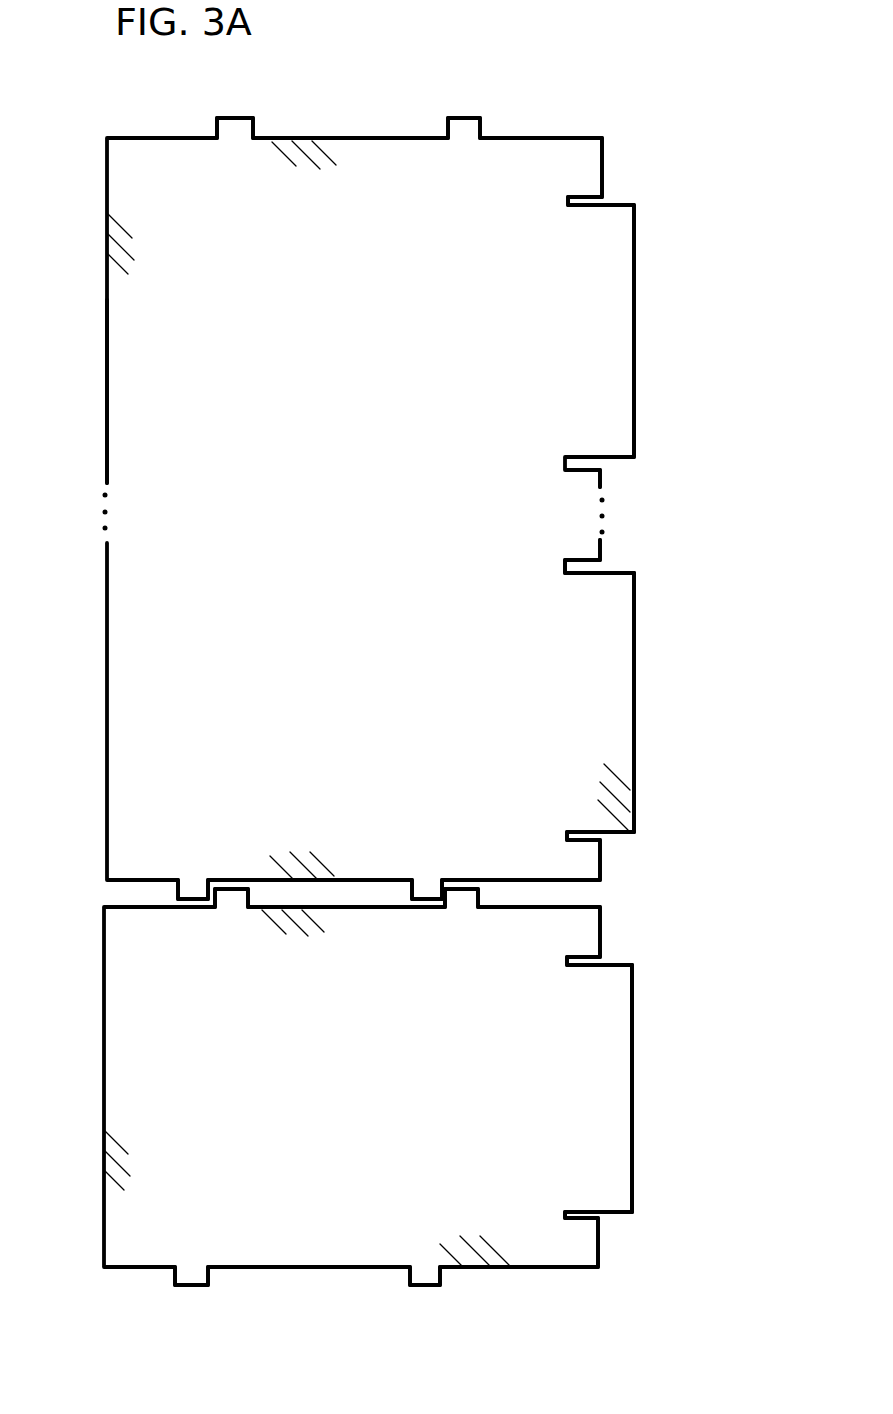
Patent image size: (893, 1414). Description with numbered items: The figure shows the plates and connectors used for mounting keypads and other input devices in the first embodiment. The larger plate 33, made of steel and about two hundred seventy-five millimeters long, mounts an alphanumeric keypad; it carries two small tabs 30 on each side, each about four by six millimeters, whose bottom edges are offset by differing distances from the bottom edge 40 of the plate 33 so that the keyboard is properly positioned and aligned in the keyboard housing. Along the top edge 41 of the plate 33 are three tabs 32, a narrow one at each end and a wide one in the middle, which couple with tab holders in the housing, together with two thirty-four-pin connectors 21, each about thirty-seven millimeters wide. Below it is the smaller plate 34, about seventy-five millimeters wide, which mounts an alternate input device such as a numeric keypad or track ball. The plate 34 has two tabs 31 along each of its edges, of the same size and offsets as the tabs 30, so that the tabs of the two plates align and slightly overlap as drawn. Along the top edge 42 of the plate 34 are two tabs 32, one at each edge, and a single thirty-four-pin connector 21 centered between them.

The 34-pin connector 21 is at (612, 328).
The tab 30 is at (238, 128).
The tab 31 is at (230, 905).
The tab 32 is at (590, 166).
The plate 33 is at (257, 444).
The plate 34 is at (188, 1077).
The bottom edge 40 is at (106, 716).
The top edge 41 is at (596, 479).
The top edge 42 is at (632, 1016).